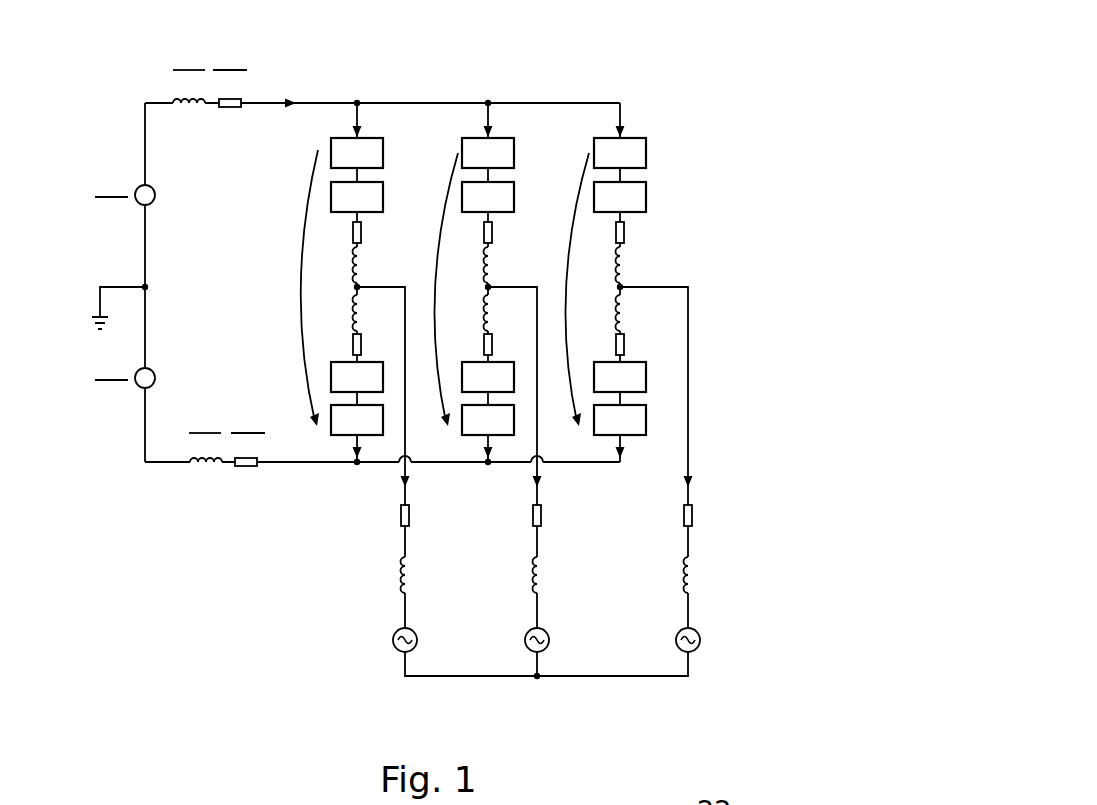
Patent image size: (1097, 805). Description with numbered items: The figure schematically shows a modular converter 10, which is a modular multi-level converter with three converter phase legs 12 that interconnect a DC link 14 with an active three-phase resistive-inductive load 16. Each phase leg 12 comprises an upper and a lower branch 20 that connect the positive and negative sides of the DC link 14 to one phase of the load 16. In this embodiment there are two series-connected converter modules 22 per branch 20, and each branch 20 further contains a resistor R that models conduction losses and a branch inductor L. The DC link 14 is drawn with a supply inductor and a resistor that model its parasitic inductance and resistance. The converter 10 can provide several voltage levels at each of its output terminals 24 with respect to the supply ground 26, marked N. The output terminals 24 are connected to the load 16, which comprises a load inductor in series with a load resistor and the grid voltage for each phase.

The modular converter 10 is at (743, 42).
The converter phase leg 12 is at (322, 522).
The DC link 14 is at (135, 518).
The load 16 is at (312, 635).
The branch 20 is at (280, 176).
The converter module 22 is at (385, 152).
The output terminal 24 is at (405, 316).
The supply ground 26 is at (150, 290).